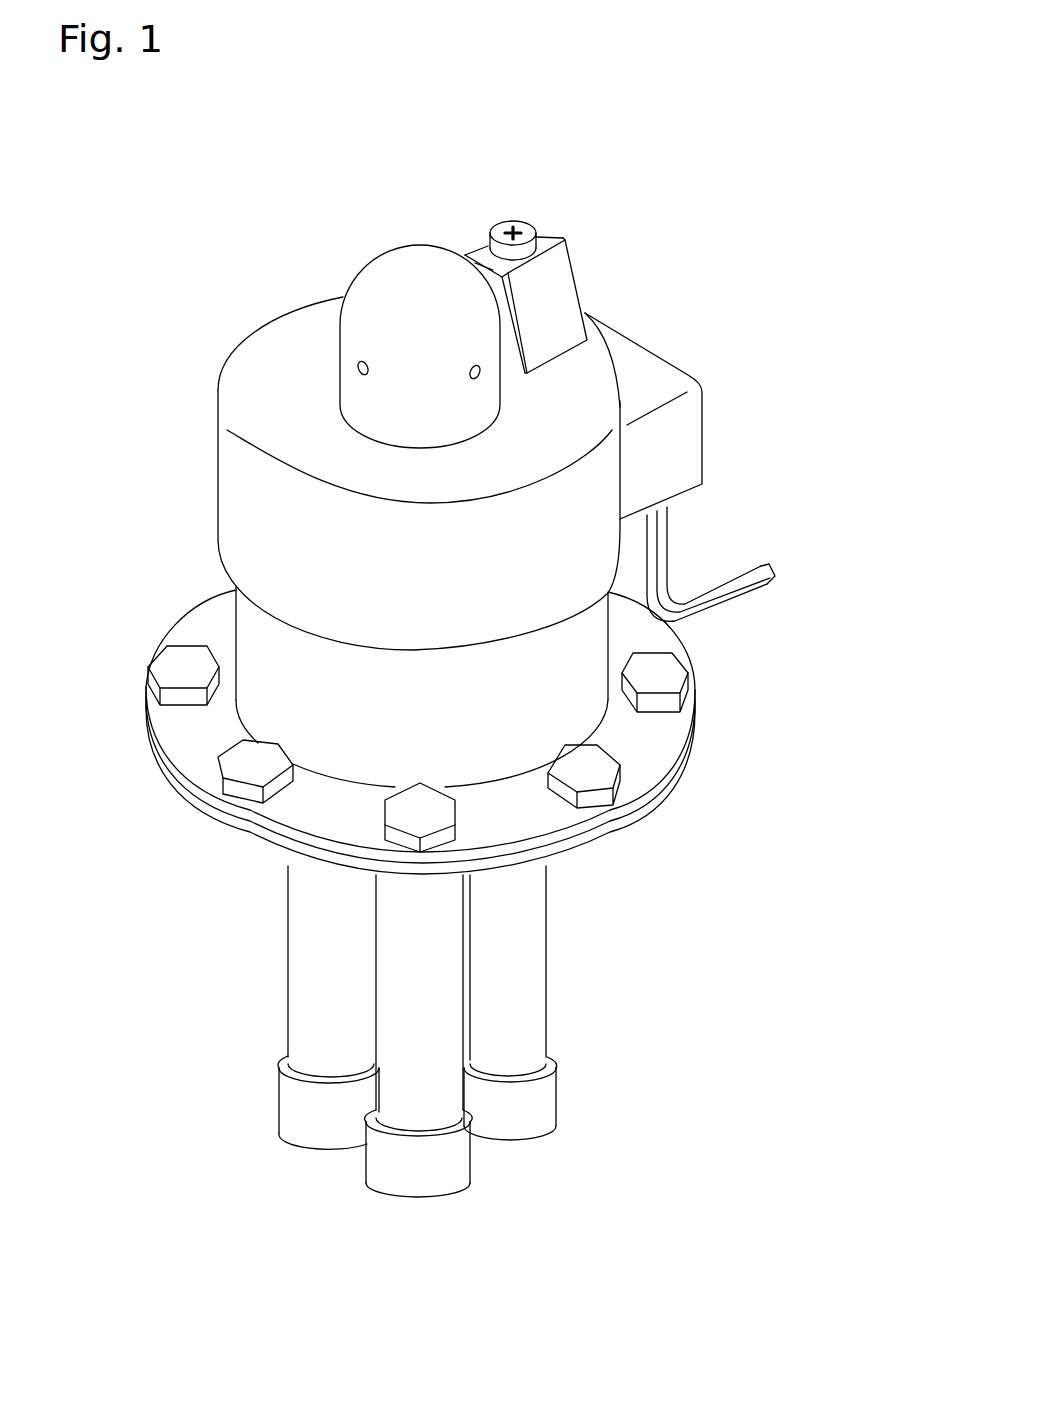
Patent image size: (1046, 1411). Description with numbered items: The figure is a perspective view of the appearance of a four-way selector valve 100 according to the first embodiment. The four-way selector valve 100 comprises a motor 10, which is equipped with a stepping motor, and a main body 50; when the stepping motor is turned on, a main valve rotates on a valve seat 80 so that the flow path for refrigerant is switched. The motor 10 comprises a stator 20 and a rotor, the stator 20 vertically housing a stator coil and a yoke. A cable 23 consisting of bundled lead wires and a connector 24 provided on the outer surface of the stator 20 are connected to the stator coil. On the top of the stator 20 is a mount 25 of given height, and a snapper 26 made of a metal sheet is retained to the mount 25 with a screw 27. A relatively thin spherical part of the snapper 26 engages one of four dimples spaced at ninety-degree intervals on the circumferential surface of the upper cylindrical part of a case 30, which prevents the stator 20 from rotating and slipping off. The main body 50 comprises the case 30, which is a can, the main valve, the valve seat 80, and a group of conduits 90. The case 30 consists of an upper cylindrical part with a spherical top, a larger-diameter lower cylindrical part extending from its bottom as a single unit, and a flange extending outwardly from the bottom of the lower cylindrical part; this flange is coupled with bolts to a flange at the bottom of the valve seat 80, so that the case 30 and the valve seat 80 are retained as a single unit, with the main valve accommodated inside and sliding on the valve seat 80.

The four-way selector valve 100 is at (762, 248).
The motor 10 is at (226, 336).
The stator 20 is at (216, 472).
The cable 23 is at (670, 548).
The connector 24 is at (702, 427).
The mount 25 is at (556, 296).
The snapper 26 is at (483, 248).
The screw 27 is at (519, 222).
The case 30 is at (230, 617).
The main body 50 is at (710, 821).
The valve seat 80 is at (162, 771).
The group of conduits 90 is at (562, 1021).